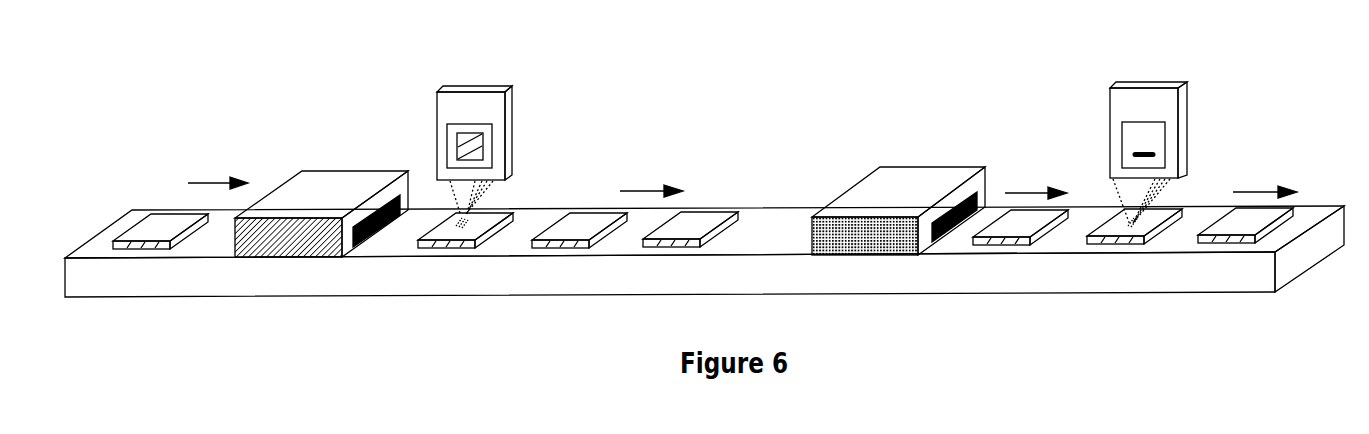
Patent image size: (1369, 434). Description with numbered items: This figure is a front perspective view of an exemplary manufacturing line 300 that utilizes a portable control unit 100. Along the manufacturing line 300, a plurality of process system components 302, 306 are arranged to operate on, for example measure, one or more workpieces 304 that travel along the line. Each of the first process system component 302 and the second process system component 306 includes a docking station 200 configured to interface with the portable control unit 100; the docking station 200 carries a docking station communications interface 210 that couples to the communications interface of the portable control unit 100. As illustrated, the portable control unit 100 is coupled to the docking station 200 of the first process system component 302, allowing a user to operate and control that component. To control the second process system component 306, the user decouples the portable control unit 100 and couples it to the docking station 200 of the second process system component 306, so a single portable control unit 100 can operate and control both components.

The portable control unit 100 is at (470, 148).
The docking station 200 is at (1133, 133).
The docking station communications interface 210 is at (1157, 150).
The manufacturing line 300 is at (332, 297).
The first process system component 302 is at (467, 150).
The workpiece 304 is at (488, 218).
The second process system component 306 is at (1146, 140).